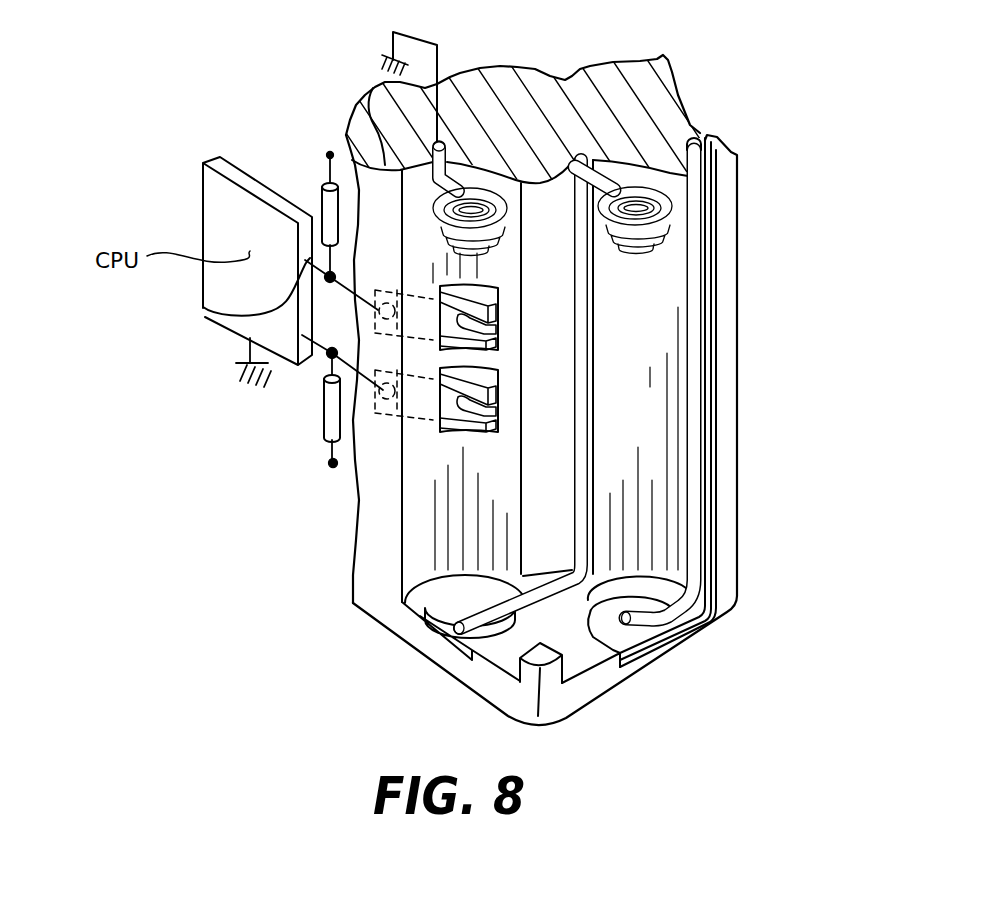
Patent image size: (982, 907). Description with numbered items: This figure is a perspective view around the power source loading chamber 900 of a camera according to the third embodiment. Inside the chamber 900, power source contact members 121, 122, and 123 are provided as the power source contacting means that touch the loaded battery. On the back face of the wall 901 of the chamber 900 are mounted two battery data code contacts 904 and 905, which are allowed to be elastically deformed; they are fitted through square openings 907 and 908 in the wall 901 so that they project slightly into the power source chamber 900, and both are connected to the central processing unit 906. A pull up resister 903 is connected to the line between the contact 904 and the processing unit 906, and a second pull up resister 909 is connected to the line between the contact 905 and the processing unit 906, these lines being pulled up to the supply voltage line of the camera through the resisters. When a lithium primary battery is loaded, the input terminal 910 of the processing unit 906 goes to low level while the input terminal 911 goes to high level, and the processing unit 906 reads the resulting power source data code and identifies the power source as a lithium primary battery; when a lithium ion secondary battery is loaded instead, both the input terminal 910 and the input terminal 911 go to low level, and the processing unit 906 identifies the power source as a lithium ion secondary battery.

The power source contact member 121 is at (444, 160).
The power source contact member 122 is at (575, 292).
The power source contact member 123 is at (702, 312).
The power source loading chamber 900 is at (638, 399).
The wall 901 is at (407, 518).
The pull up resister 903 is at (321, 200).
The battery data code contact 904 is at (496, 312).
The battery data code contact 905 is at (496, 392).
The CPU 906 is at (220, 207).
The square opening 907 is at (497, 288).
The square opening 908 is at (497, 371).
The pull up resister 909 is at (326, 407).
The input terminal 910 is at (205, 317).
The input terminal 911 is at (297, 365).